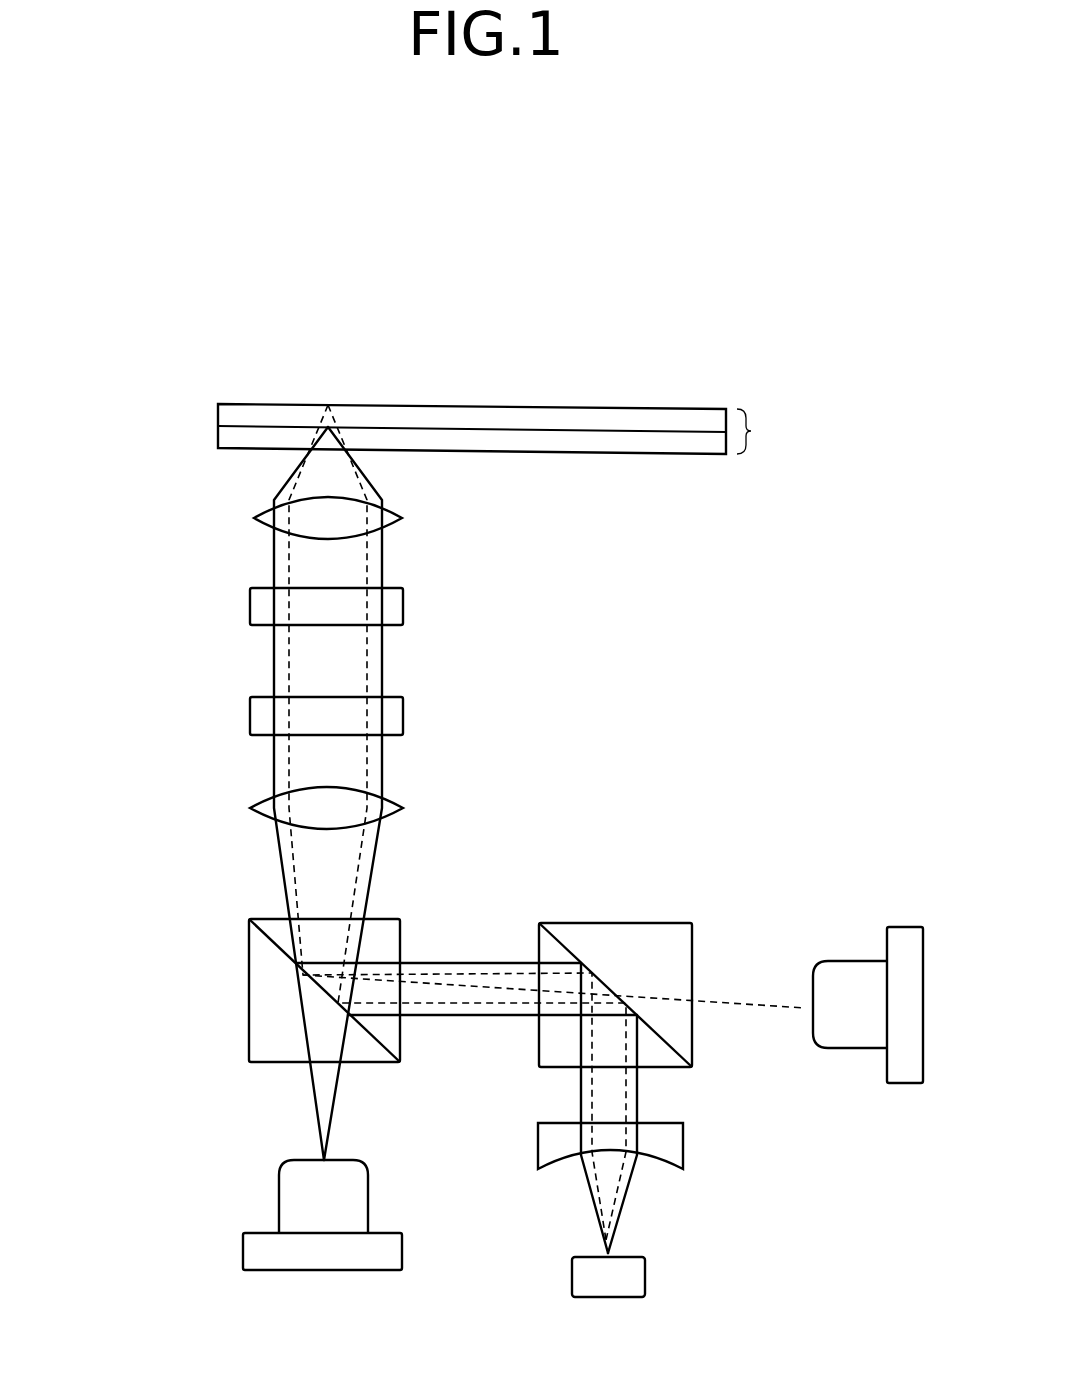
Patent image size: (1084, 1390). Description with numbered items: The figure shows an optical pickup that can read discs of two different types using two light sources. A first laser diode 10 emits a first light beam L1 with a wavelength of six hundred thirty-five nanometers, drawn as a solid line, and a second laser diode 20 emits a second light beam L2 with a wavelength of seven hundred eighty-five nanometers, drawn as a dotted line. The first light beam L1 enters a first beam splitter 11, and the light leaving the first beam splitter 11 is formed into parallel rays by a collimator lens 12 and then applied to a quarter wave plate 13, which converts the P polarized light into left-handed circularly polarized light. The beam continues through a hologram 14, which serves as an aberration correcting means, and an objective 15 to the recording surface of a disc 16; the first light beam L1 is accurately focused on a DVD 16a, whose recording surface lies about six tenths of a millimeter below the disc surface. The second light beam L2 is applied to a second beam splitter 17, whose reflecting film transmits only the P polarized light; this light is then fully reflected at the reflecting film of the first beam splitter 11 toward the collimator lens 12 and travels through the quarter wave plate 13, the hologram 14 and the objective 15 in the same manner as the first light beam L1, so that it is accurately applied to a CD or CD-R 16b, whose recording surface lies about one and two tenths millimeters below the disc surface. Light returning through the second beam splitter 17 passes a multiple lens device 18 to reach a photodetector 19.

The first laser diode 10 is at (402, 1252).
The first beam splitter 11 is at (398, 919).
The collimator lens 12 is at (403, 808).
The quarter wave plate 13 is at (405, 715).
The hologram 14 is at (405, 605).
The objective 15 is at (402, 518).
The disc 16 is at (623, 386).
The DVD 16a is at (217, 438).
The CD or CD-R 16b is at (776, 431).
The second beam splitter 17 is at (675, 923).
The multiple lens device 18 is at (683, 1143).
The photodetector 19 is at (645, 1277).
The second laser diode 20 is at (908, 927).
The first light beam L1 is at (310, 1093).
The second light beam L2 is at (745, 1008).